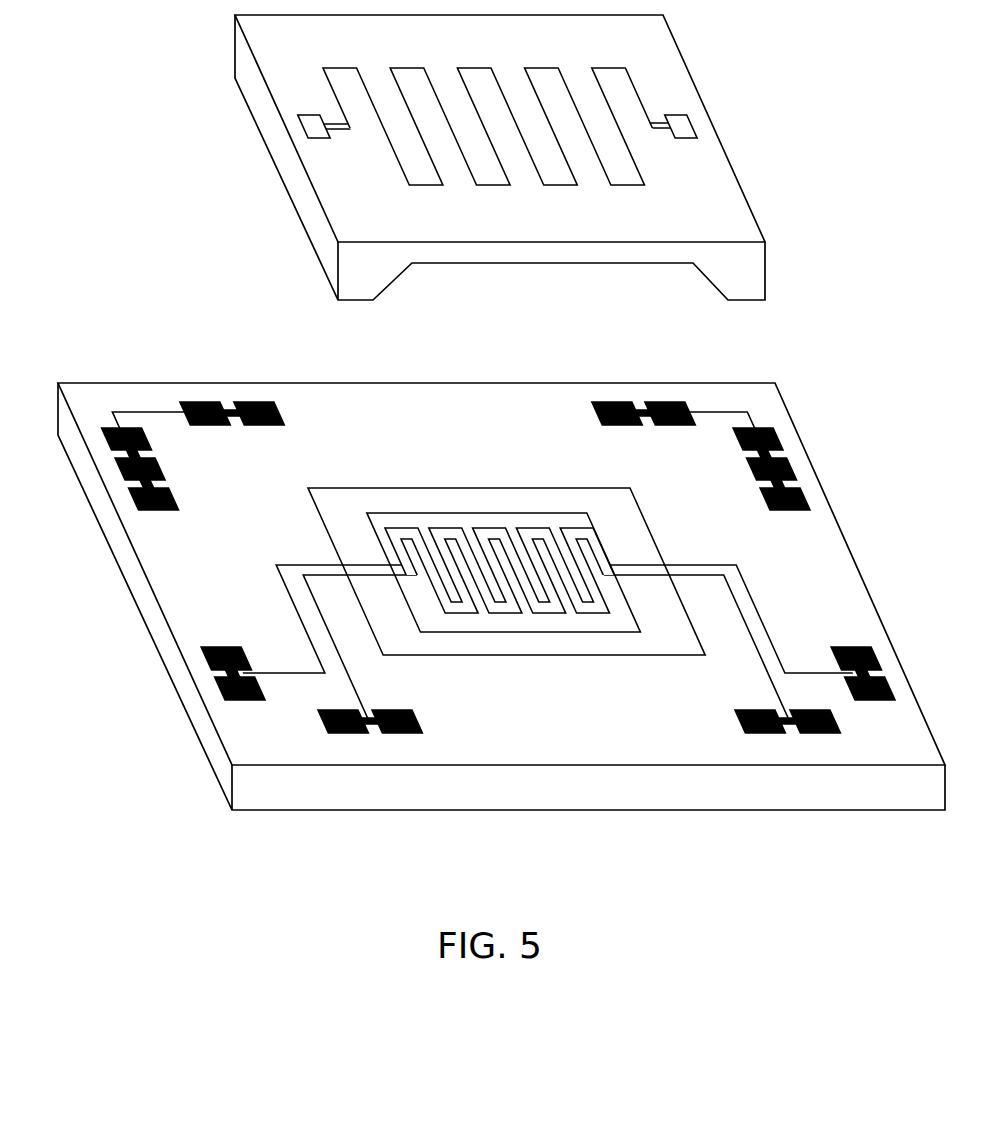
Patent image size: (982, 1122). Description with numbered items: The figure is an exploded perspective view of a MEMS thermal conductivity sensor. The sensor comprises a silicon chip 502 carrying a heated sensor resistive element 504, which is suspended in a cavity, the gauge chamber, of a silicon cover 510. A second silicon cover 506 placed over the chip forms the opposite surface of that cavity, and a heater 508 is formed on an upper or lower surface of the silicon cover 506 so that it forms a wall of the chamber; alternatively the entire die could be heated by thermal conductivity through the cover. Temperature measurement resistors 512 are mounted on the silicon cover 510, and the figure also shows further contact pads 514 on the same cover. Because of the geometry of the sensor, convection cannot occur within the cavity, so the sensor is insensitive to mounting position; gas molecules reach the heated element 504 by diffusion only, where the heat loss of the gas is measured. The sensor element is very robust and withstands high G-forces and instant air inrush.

The silicon chip 502 is at (537, 632).
The heated sensor resistive element 504 is at (607, 553).
The silicon cover 506 is at (700, 93).
The heater 508 is at (614, 67).
The silicon cover 510 is at (232, 767).
The temperature measurement resistors 512 is at (105, 440).
The right contact pads 514 is at (772, 430).